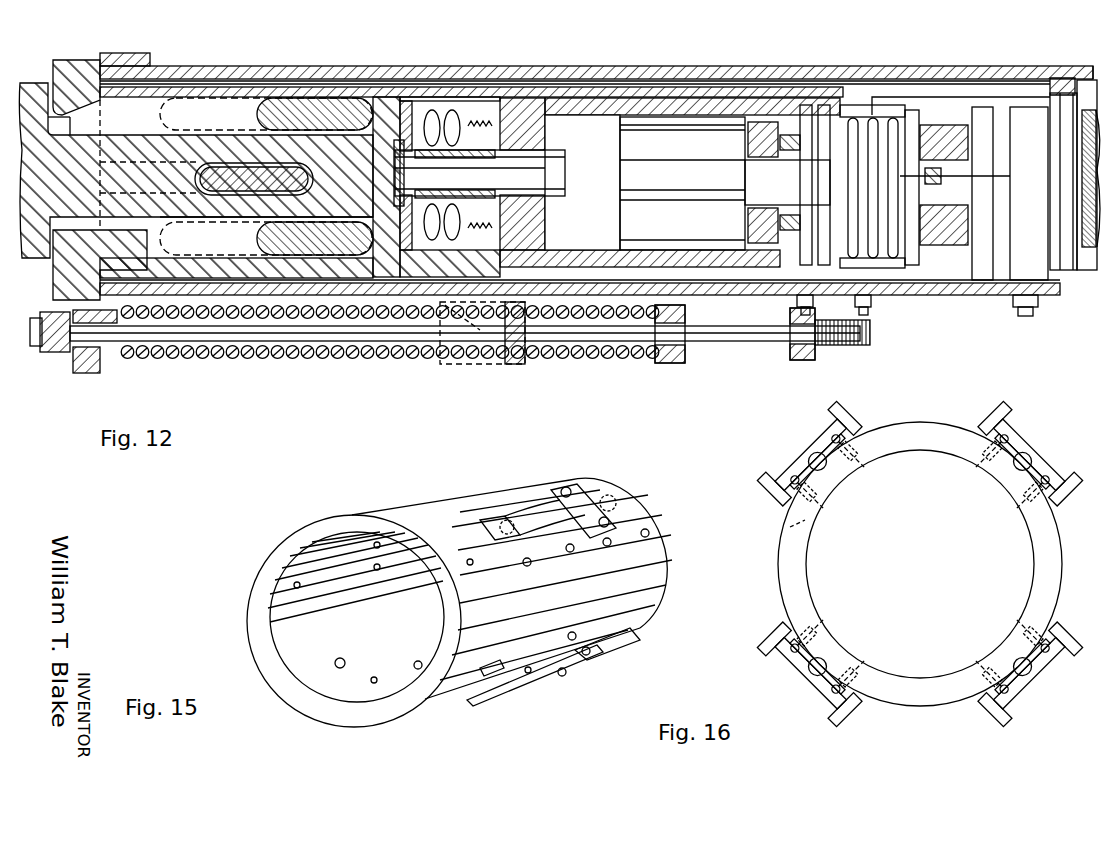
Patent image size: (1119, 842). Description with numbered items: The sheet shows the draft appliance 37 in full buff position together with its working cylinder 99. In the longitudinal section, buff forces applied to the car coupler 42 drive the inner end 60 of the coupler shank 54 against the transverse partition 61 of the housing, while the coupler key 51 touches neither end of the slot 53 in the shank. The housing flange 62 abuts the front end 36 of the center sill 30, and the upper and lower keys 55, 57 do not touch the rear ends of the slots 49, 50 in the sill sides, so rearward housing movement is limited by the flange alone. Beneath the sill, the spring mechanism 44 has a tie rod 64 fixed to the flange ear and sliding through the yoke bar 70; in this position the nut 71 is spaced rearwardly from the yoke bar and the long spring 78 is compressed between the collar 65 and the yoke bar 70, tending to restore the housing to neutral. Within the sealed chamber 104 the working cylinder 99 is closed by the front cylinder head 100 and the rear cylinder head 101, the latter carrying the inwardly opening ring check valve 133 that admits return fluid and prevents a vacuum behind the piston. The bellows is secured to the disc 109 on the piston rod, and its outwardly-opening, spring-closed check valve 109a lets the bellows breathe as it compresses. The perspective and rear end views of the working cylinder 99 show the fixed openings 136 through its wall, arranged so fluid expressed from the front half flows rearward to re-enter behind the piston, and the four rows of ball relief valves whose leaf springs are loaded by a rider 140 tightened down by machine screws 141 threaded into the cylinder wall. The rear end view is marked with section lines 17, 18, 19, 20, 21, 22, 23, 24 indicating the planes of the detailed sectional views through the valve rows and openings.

In FIG. 12, the center sill 30 is at (612, 70).
In FIG. 12, the front end of the center sill 36 is at (100, 57).
In FIG. 12, the draft appliance 37 is at (448, 88).
In FIG. 12, the car coupler 42 is at (32, 84).
In FIG. 12, the spring mechanism 44 is at (578, 357).
In FIG. 12, the upper slot 49 is at (360, 98).
In FIG. 12, the lower slot 50 is at (375, 259).
In FIG. 12, the coupler key 51 is at (212, 168).
In FIG. 12, the slot in the coupler shank 53 is at (292, 217).
In FIG. 12, the coupler shank 54 is at (128, 134).
In FIG. 12, the upper key 55 is at (275, 104).
In FIG. 12, the lower key 57 is at (268, 242).
In FIG. 12, the inner end of the coupler shank 60 is at (406, 118).
In FIG. 12, the transverse partition 61 is at (430, 110).
In FIG. 12, the housing flange 62 is at (70, 52).
In FIG. 12, the tie rod 64 is at (765, 345).
In FIG. 12, the collar 65 is at (108, 358).
In FIG. 12, the yoke bar 70 is at (665, 365).
In FIG. 12, the nut 71 is at (804, 361).
In FIG. 12, the long spring 78 is at (206, 360).
In FIG. 15, the working cylinder 99 is at (282, 550).
In FIG. 16, the working cylinder 99 is at (936, 435).
In FIG. 12, the front cylinder head 100 is at (506, 103).
In FIG. 12, the rear cylinder head 101 is at (760, 110).
In FIG. 12, the sealed chamber 104 is at (680, 92).
In FIG. 12, the disc 109 is at (905, 116).
In FIG. 12, the check valve 109a is at (950, 178).
In FIG. 12, the ring check valve 133 is at (745, 236).
In FIG. 15, the fixed openings 136 is at (530, 560).
In FIG. 16, the fixed openings 136 is at (790, 527).
In FIG. 16, the rider 140 is at (838, 432).
In FIG. 16, the machine screws 141 is at (810, 426).
In FIG. 16, the section line 17 is at (803, 412).
In FIG. 16, the section line 18 is at (780, 483).
In FIG. 16, the section line 19 is at (837, 633).
In FIG. 16, the section line 20 is at (867, 657).
In FIG. 16, the section line 21 is at (962, 652).
In FIG. 16, the section line 22 is at (995, 632).
In FIG. 16, the section line 23 is at (1062, 515).
In FIG. 16, the section line 24 is at (1063, 453).